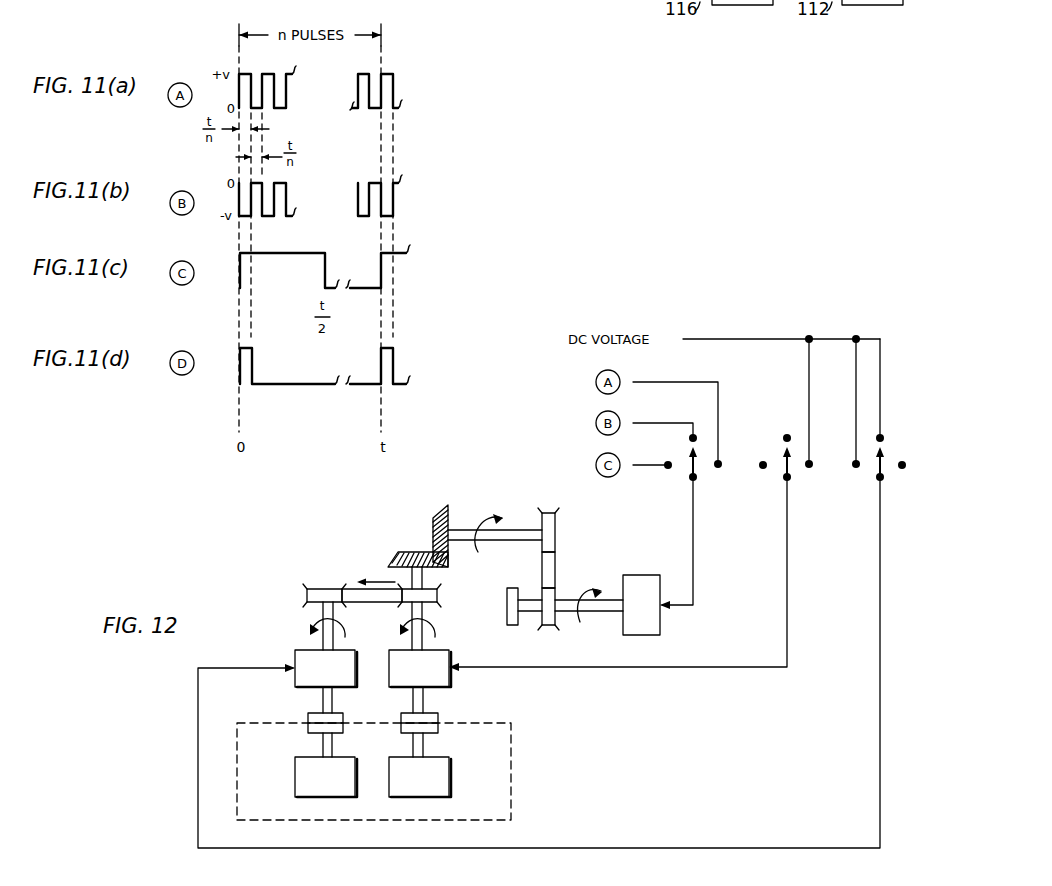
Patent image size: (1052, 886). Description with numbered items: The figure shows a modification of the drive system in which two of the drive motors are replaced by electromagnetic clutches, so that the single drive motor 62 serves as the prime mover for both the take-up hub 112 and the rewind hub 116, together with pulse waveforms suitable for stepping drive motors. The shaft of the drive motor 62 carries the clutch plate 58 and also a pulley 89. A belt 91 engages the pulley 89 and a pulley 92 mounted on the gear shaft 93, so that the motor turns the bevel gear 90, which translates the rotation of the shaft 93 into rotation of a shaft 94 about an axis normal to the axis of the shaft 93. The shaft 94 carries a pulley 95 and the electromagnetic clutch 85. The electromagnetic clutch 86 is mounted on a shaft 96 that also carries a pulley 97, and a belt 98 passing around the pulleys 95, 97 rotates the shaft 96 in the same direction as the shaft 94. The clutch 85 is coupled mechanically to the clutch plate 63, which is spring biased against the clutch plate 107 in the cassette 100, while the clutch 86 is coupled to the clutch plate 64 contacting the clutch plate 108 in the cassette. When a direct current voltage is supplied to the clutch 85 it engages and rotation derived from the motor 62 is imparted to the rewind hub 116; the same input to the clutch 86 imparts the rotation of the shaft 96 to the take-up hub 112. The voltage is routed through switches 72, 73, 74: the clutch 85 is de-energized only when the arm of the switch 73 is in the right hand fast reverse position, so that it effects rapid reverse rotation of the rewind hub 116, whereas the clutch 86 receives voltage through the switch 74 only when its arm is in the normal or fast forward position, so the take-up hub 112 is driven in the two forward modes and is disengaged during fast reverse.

The clutch plate 58 is at (509, 618).
The drive motor 62 is at (638, 575).
The clutch plate 63 is at (441, 719).
The clutch plate 64 is at (309, 718).
The switch 72 is at (705, 471).
The switch 73 is at (798, 466).
The switch 74 is at (891, 466).
The electromagnetic clutch 85 is at (440, 672).
The electromagnetic clutch 86 is at (300, 674).
The pulley 89 is at (557, 618).
The bevel gear 90 is at (420, 552).
The belt 91 is at (557, 571).
The pulley 92 is at (556, 531).
The gear shaft 93 is at (465, 530).
The shaft 94 is at (424, 576).
The pulley 95 is at (438, 600).
The shaft 96 is at (318, 644).
The pulley 97 is at (326, 588).
The belt 98 is at (368, 604).
The cassette 100 is at (512, 766).
The clutch plate 107 is at (439, 728).
The clutch plate 108 is at (308, 728).
The take-up hub 112 is at (298, 775).
The rewind hub 116 is at (440, 779).